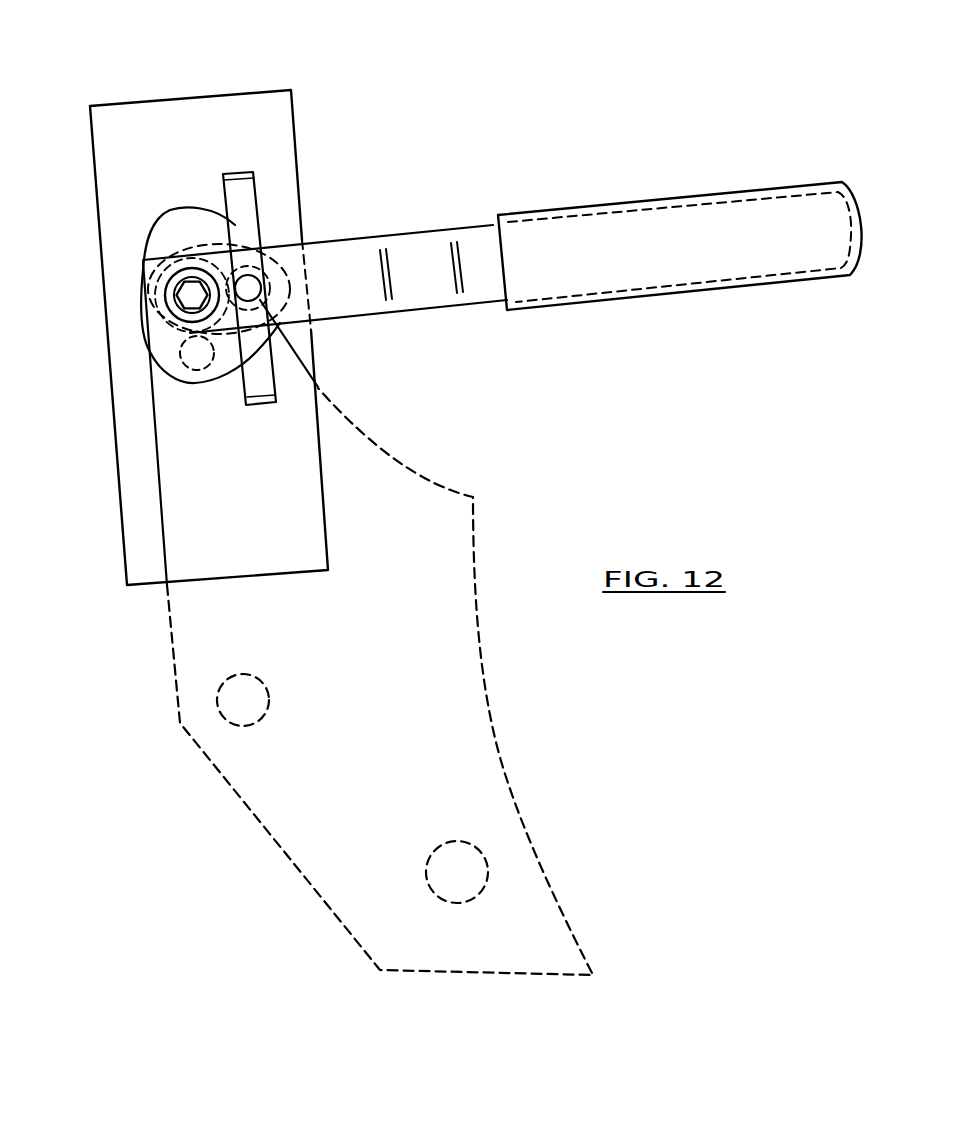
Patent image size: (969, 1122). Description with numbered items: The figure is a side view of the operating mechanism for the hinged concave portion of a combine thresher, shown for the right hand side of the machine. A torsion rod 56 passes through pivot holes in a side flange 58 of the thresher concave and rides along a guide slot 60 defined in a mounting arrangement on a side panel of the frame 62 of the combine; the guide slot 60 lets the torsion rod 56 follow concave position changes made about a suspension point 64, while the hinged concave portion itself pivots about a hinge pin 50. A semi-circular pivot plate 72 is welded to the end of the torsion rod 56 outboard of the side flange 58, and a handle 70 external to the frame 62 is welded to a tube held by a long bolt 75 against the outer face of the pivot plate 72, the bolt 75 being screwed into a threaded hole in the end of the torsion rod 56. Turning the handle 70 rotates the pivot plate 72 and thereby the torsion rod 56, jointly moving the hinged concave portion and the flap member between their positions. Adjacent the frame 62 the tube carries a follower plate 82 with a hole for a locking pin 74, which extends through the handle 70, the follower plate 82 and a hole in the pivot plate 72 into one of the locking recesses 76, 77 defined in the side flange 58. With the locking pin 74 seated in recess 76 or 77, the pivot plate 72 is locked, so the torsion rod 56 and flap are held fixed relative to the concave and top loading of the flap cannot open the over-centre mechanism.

The hinge pin 50 is at (427, 880).
The torsion rod 56 is at (145, 290).
The side flange 58 is at (177, 547).
The guide slot 60 is at (268, 113).
The frame 62 is at (483, 398).
The suspension point 64 is at (218, 717).
The handle 70 is at (547, 260).
The pivot plate 72 is at (181, 213).
The locking pin 74 is at (262, 275).
The bolt 75 is at (173, 316).
The locking recess 76 is at (277, 318).
The locking recess 77 is at (180, 357).
The follower plate 82 is at (228, 258).